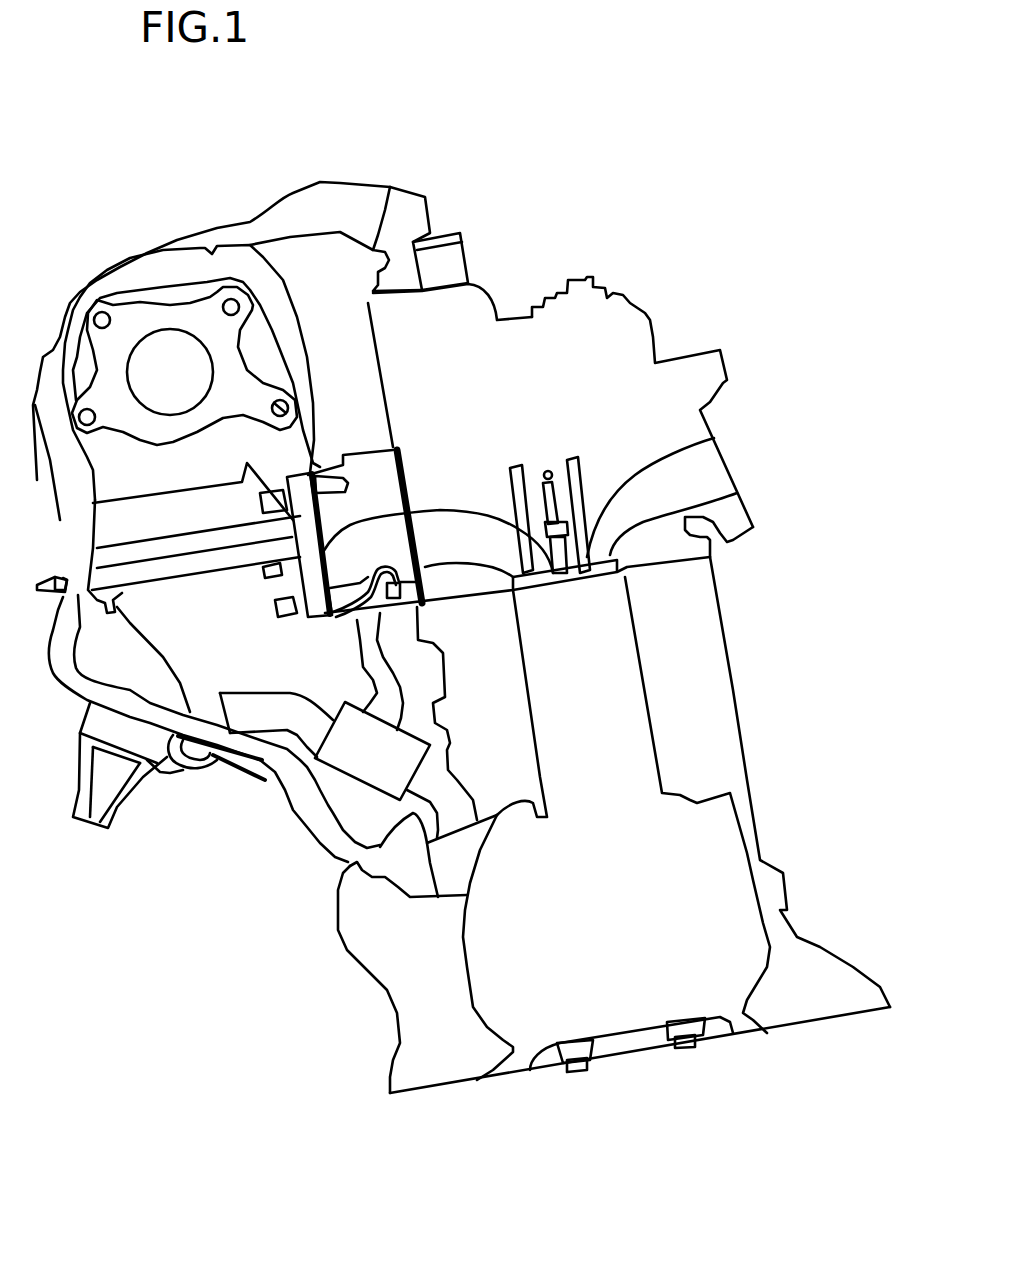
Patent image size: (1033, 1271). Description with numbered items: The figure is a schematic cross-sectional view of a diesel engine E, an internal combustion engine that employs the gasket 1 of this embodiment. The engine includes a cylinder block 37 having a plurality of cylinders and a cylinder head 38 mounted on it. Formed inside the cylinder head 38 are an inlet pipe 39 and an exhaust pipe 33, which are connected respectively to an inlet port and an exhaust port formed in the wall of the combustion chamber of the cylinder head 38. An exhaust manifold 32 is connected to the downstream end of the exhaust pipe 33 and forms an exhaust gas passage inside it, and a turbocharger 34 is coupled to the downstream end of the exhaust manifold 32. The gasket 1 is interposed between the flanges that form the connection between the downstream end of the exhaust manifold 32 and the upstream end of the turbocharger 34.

The gasket 1 is at (325, 473).
The exhaust manifold 32 is at (372, 470).
The exhaust pipe 33 is at (450, 527).
The turbocharger 34 is at (213, 650).
The cylinder block 37 is at (693, 622).
The cylinder head 38 is at (667, 533).
The inlet pipe 39 is at (615, 517).
The diesel engine E is at (694, 216).